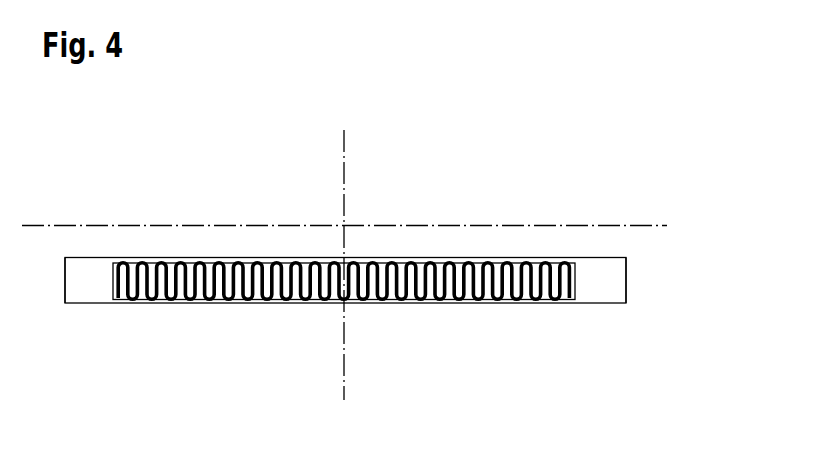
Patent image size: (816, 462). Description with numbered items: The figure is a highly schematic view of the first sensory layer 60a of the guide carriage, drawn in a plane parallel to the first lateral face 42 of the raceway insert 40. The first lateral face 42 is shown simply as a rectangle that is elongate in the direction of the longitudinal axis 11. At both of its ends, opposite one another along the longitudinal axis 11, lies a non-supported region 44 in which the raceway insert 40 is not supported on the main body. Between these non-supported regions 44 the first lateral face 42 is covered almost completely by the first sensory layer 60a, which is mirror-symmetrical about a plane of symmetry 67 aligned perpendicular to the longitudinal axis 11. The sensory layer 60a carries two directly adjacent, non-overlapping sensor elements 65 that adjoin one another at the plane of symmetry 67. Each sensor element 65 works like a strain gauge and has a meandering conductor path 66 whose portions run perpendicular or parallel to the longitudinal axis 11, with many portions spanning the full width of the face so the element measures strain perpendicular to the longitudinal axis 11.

The longitudinal axis 11 is at (640, 224).
The plane of symmetry 67 is at (346, 165).
The raceway insert 40 is at (376, 315).
The first lateral face 42 is at (625, 282).
The non-supported region 44 is at (86, 298).
The sensor element 65 is at (268, 286).
The meandering conductor path 66 is at (343, 317).
The first sensory layer 60a is at (170, 282).